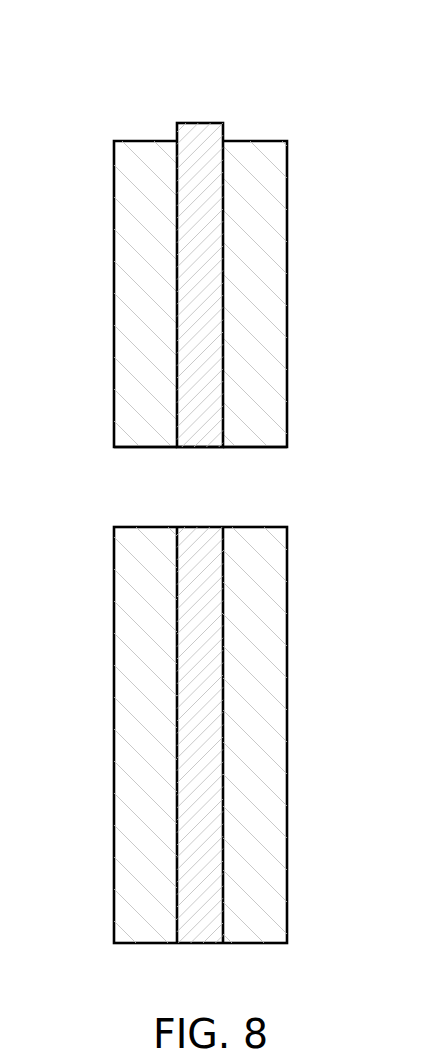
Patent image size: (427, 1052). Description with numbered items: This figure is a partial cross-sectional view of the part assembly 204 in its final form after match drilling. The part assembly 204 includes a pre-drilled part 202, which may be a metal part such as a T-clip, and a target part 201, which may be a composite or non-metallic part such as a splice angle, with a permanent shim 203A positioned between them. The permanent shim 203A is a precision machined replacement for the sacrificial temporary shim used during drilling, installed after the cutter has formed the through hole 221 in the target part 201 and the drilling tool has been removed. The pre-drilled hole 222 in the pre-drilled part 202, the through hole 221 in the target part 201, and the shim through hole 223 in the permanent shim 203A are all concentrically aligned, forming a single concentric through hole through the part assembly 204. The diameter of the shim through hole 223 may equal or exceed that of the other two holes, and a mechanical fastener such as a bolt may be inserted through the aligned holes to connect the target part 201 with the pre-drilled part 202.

The target part 201 is at (288, 193).
The pre-drilled part 202 is at (114, 193).
The permanent shim 203A is at (198, 122).
The part assembly 204 is at (222, 228).
The through hole 221 is at (262, 449).
The pre-drilled hole 222 is at (137, 449).
The shim through hole 223 is at (203, 527).